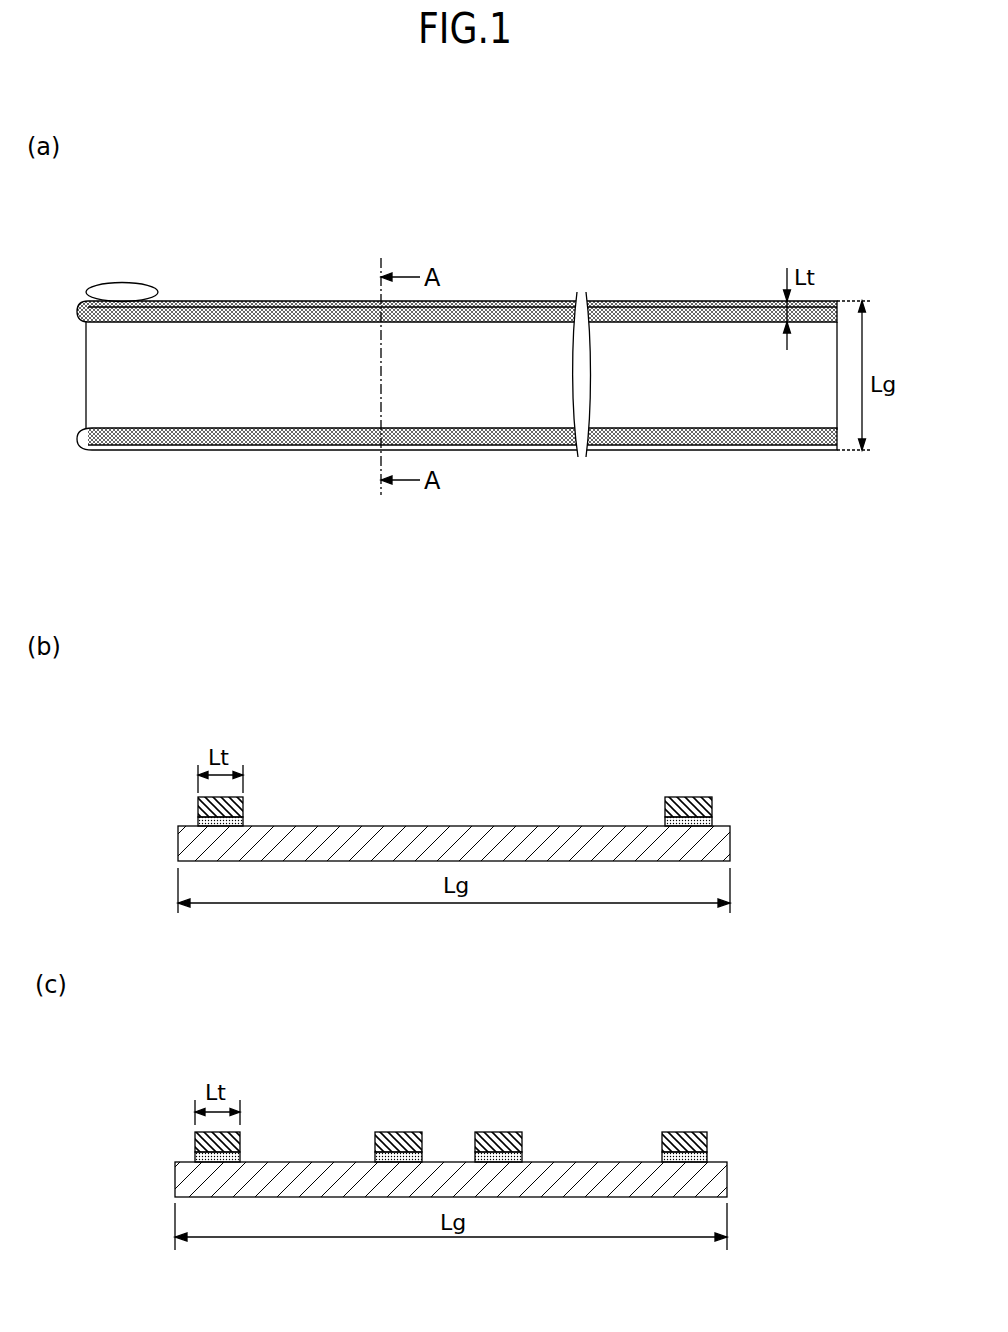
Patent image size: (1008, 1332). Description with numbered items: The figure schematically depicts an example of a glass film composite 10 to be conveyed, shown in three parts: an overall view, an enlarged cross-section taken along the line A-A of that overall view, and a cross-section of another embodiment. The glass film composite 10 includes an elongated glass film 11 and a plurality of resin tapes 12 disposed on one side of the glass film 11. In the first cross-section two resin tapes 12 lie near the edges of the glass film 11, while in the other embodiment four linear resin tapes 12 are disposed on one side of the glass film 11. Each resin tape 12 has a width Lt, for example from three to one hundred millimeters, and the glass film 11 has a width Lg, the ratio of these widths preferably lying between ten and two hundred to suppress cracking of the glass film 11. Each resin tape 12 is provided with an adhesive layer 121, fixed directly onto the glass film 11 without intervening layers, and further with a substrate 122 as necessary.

The glass film composite 10 is at (100, 224).
The glass film 11 is at (759, 405).
The resin tape 12 is at (670, 317).
The adhesive layer 121 is at (713, 822).
The substrate 122 is at (713, 805).